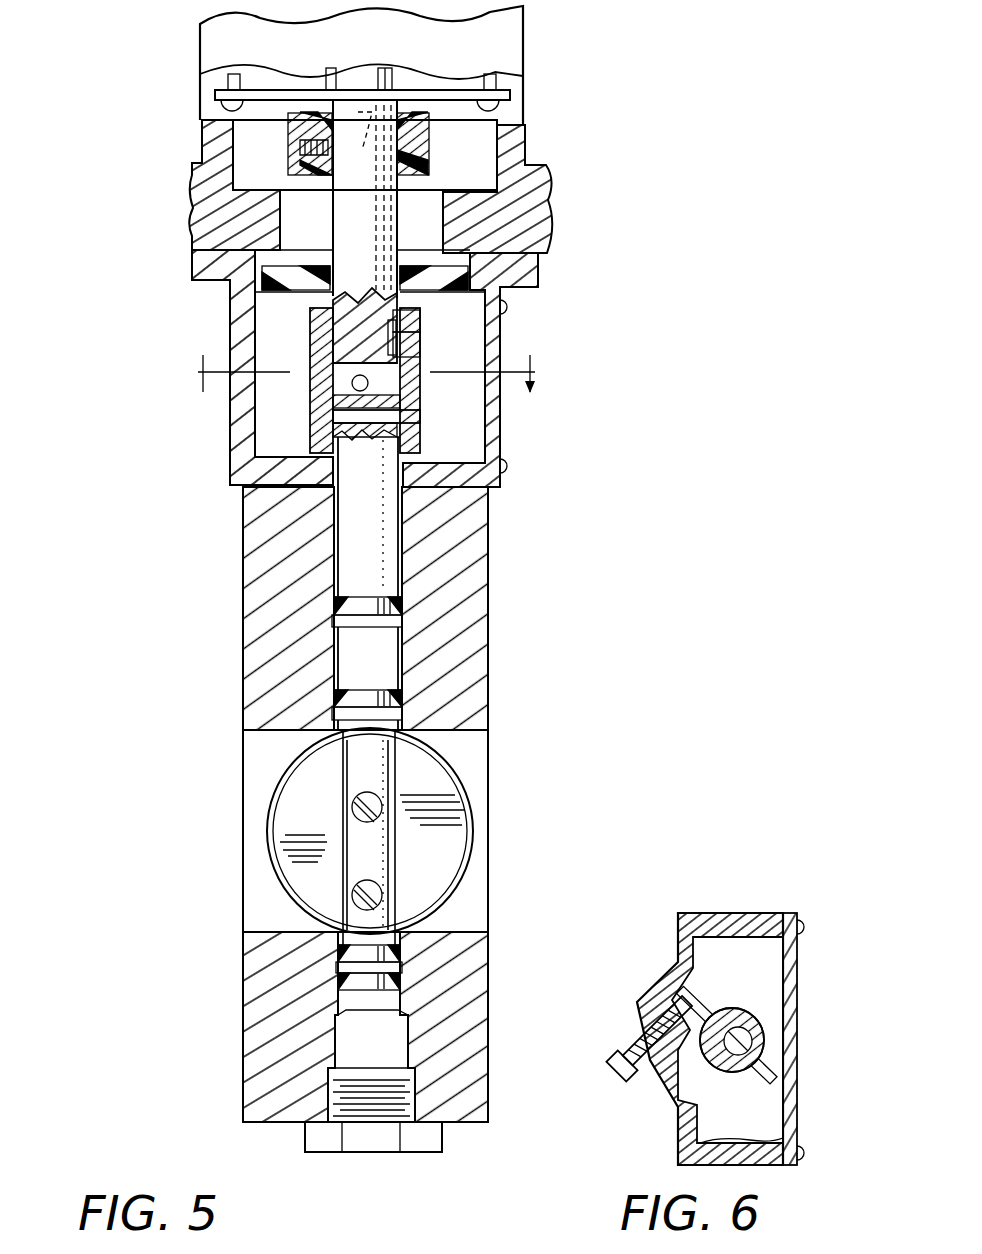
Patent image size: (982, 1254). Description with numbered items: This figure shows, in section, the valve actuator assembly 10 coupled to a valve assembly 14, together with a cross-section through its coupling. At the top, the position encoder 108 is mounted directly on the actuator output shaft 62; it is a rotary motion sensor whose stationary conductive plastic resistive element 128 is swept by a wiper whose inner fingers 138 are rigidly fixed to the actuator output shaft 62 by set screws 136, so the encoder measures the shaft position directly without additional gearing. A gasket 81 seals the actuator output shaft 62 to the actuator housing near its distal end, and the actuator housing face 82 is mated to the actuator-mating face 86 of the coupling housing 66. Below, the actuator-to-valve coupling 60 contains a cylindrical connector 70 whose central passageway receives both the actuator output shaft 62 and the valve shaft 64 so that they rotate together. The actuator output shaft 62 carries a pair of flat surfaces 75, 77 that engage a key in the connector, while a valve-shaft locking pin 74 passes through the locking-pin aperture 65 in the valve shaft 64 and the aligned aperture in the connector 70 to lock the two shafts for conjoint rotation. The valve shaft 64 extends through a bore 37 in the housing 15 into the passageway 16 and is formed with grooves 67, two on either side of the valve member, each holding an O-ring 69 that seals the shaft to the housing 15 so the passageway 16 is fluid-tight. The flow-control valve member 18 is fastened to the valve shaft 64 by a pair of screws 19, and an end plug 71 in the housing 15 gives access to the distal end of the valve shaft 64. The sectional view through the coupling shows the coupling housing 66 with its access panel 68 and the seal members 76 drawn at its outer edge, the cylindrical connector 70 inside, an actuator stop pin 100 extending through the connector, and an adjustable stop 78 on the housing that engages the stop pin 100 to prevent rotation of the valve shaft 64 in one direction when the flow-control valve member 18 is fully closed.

In FIG. 5, the valve actuator assembly 10 is at (98, 72).
In FIG. 5, the valve assembly 14 is at (128, 635).
In FIG. 5, the housing 15 is at (252, 1046).
In FIG. 5, the passageway 16 is at (262, 772).
In FIG. 5, the flow-control valve member 18 is at (290, 805).
In FIG. 5, the screws 19 is at (372, 795).
In FIG. 5, the bore 37 is at (392, 572).
In FIG. 5, the actuator-to-valve coupling 60 is at (572, 371).
In FIG. 6, the actuator-to-valve coupling 60 is at (693, 910).
In FIG. 5, the actuator output shaft 62 is at (352, 292).
In FIG. 5, the valve shaft 64 is at (355, 566).
In FIG. 5, the locking-pin aperture 65 is at (372, 430).
In FIG. 5, the housing 66 is at (238, 450).
In FIG. 6, the housing 66 is at (676, 958).
In FIG. 5, the grooves 67 is at (372, 598).
In FIG. 6, the access panel 68 is at (800, 1020).
In FIG. 5, the O-ring 69 is at (400, 606).
In FIG. 5, the cylindrical connector 70 is at (422, 366).
In FIG. 6, the cylindrical connector 70 is at (738, 1072).
In FIG. 5, the end plug 71 is at (366, 1137).
In FIG. 5, the valve-shaft locking pin 74 is at (422, 416).
In FIG. 5, the flat surface 75 is at (422, 320).
In FIG. 6, the O-ring 76 is at (805, 928).
In FIG. 5, the flat surface 77 is at (422, 342).
In FIG. 6, the adjustable stop 78 is at (631, 1082).
In FIG. 5, the gasket 81 is at (298, 282).
In FIG. 5, the face 82 is at (232, 242).
In FIG. 5, the actuator-mating face 86 is at (196, 266).
In FIG. 6, the actuator stop pin 100 is at (704, 1012).
In FIG. 5, the position encoder 108 is at (462, 150).
In FIG. 5, the conductive plastic resistive element 128 is at (318, 90).
In FIG. 5, the set screws 136 is at (300, 147).
In FIG. 5, the inner fingers 138 is at (365, 199).